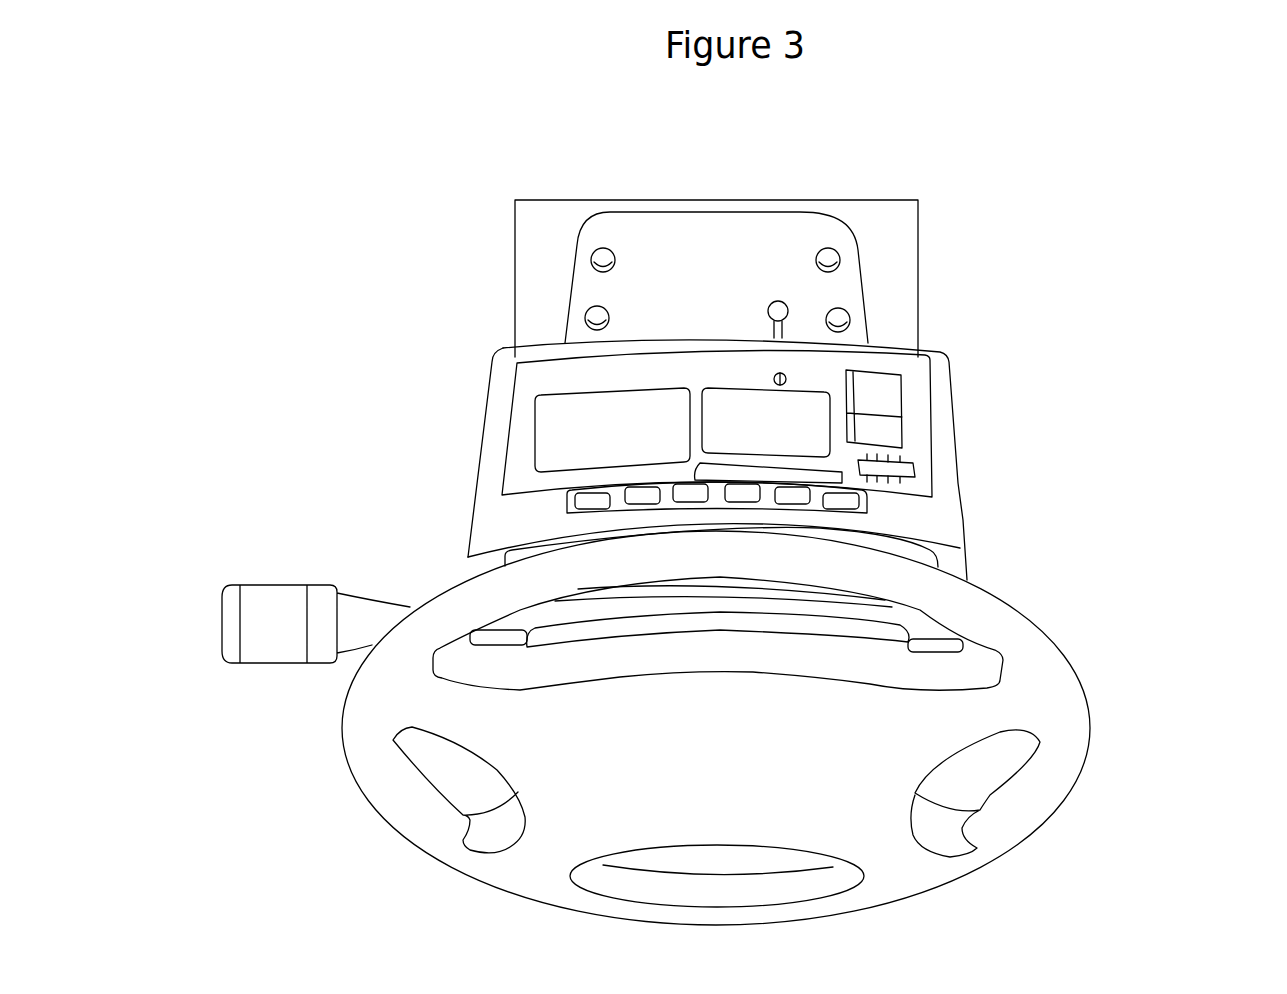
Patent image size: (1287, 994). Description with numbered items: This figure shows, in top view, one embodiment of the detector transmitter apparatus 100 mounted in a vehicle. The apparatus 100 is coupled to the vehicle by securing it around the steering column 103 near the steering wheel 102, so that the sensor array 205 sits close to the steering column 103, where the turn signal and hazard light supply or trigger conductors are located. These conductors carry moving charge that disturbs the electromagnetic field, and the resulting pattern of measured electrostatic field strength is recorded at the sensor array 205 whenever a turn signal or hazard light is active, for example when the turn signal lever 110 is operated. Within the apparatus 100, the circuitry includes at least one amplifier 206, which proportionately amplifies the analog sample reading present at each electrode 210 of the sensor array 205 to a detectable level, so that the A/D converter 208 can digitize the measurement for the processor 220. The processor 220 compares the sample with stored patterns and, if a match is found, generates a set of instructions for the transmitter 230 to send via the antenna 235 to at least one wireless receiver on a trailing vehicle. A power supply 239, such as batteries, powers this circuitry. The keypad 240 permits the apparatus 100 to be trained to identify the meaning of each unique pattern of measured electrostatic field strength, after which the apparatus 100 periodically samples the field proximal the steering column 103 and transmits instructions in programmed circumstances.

The apparatus 100 is at (440, 485).
The steering wheel 102 is at (383, 763).
The steering column 103 is at (595, 258).
The turn signal lever 110 is at (287, 641).
The sensor array 205 is at (650, 305).
The amplifier 206 is at (883, 390).
The A/D converter 208 is at (887, 465).
The electrode 210 is at (537, 265).
The processor 220 is at (637, 440).
The transmitter 230 is at (813, 427).
The antenna 235 is at (777, 310).
The power supply 239 is at (752, 470).
The keypad 240 is at (865, 497).